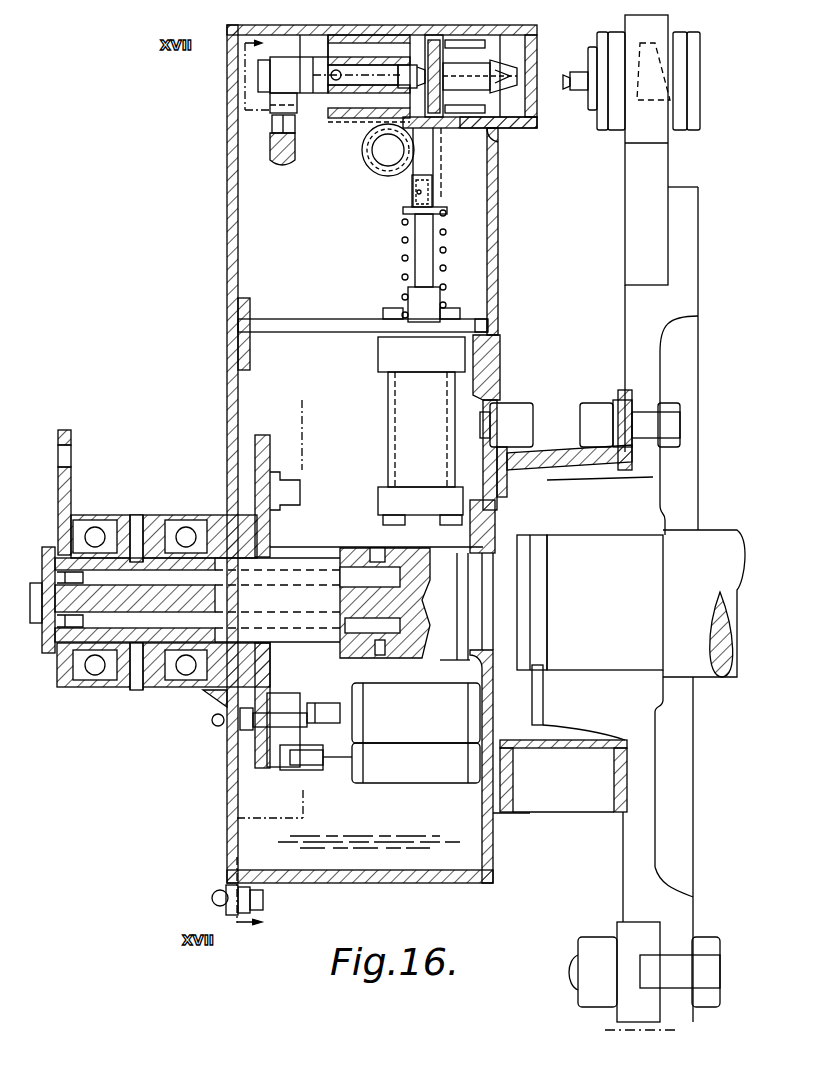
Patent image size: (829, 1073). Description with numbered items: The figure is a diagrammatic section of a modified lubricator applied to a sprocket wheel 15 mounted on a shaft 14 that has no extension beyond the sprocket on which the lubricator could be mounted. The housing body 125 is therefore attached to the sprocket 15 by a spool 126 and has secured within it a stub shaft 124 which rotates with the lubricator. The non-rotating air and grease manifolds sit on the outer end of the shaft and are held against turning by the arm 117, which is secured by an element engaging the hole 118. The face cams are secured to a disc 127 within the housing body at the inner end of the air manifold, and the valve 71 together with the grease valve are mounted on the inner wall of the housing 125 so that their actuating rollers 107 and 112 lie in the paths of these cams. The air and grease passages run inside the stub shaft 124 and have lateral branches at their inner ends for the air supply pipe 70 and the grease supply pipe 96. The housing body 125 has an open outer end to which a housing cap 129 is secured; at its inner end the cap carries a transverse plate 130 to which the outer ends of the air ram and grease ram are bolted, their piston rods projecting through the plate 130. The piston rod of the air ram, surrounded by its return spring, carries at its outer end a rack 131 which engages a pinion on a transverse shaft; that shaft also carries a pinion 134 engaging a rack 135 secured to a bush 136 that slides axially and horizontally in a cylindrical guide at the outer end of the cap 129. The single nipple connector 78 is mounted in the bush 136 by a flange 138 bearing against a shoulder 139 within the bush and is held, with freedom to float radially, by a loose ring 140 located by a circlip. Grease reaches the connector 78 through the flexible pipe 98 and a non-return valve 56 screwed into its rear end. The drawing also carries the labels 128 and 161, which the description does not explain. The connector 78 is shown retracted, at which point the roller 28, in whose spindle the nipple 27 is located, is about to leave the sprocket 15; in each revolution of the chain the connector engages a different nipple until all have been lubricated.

The shaft 14 is at (631, 608).
The sprocket wheel 15 is at (684, 270).
The nipple 27 is at (575, 95).
The roller 28 is at (640, 135).
The non-return valve 56 is at (318, 55).
The air supply pipe 70 is at (377, 555).
The valve 71 is at (416, 713).
The nipple connector 78 is at (517, 80).
The grease supply pipe 96 is at (380, 655).
The flexible pipe 98 is at (295, 155).
The actuating roller 107 is at (325, 703).
The actuating roller 112 is at (316, 770).
The arm 117 is at (71, 478).
The hole 118 is at (71, 452).
The stub shaft 124 is at (440, 545).
The housing body 125 is at (500, 368).
The spool 126 is at (552, 447).
The disc 127 is at (272, 440).
The ledge 128 is at (492, 330).
The housing cap 129 is at (500, 300).
The transverse plate 130 is at (290, 319).
The rack 131 is at (432, 192).
The pinion 134 is at (500, 150).
The rack 135 is at (297, 125).
The bush 136 is at (370, 43).
The flange 138 is at (500, 72).
The shoulder 139 is at (410, 100).
The loose ring 140 is at (437, 128).
The guide plate 161 is at (485, 44).